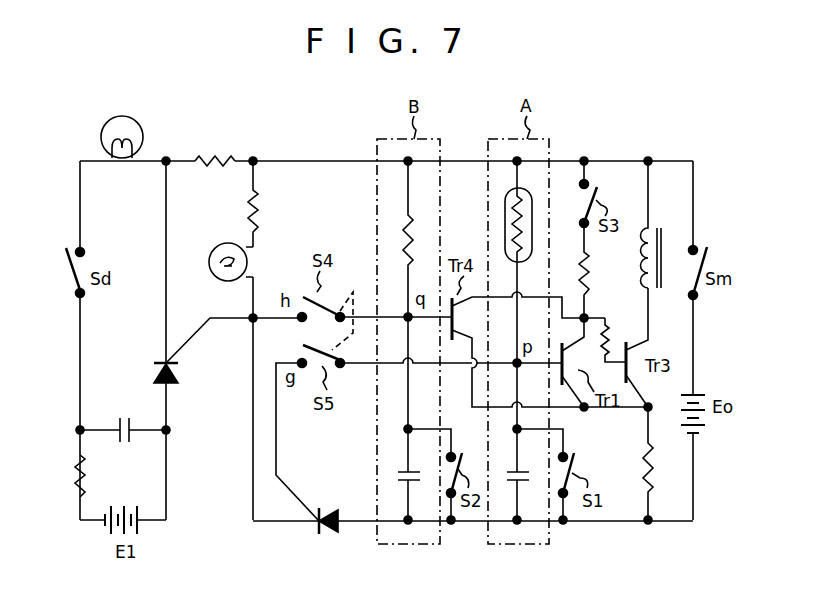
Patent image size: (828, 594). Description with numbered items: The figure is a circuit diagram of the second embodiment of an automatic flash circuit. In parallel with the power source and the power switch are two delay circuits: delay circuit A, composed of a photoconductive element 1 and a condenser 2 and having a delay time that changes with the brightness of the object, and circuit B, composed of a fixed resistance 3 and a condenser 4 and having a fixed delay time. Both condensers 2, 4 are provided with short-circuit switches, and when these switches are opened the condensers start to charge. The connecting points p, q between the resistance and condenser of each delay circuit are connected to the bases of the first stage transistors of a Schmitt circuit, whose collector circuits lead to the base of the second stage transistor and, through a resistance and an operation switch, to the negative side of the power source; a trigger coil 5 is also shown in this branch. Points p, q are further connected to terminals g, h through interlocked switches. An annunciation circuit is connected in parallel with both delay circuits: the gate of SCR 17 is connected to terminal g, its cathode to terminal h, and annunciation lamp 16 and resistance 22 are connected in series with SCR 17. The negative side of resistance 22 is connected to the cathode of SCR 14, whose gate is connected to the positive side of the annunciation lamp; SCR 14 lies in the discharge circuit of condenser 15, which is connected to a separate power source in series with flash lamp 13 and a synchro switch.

The photoconductive element 1 is at (522, 201).
The condenser 2 is at (520, 474).
The fixed resistance 3 is at (414, 295).
The condenser 4 is at (412, 474).
The trigger coil 5 is at (668, 235).
The flash lamp 13 is at (143, 128).
The SCR 14 is at (203, 354).
The condenser 15 is at (123, 420).
The annunciation lamp 16 is at (223, 245).
The SCR 17 is at (332, 535).
The resistance 22 is at (266, 204).